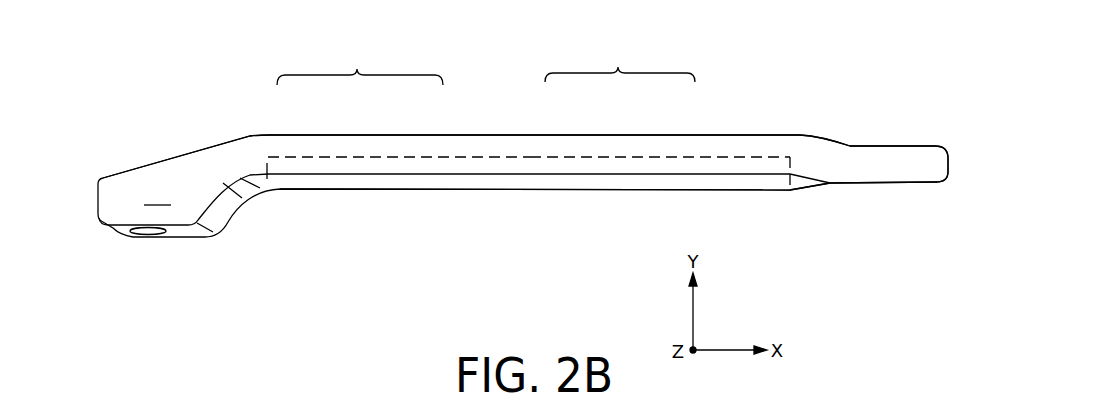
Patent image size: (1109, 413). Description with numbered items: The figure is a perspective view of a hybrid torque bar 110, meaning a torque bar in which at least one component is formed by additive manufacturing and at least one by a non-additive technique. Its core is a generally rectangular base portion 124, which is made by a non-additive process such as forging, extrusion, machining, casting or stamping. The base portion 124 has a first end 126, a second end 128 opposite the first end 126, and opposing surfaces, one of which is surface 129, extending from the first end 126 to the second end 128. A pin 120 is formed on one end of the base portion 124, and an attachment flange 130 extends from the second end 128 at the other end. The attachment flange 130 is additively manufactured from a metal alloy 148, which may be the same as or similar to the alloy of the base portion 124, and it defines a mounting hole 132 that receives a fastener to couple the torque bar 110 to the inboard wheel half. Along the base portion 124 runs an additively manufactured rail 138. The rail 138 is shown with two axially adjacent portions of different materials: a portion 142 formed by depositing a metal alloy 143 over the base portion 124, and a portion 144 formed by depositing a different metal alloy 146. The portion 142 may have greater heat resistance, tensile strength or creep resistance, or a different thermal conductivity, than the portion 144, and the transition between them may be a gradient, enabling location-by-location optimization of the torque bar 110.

The torque bar 110 is at (727, 59).
The pin 120 is at (882, 147).
The base portion 124 is at (553, 188).
The first end 126 is at (795, 199).
The second end 128 is at (286, 197).
The opposing surface 129 is at (455, 181).
The attachment flange 130 is at (160, 163).
The mounting hole 132 is at (152, 250).
The rail 138 is at (478, 135).
The portion of rail 142 is at (360, 62).
The metal alloy 143 is at (321, 137).
The portion of rail 144 is at (620, 60).
The metal alloy 146 is at (612, 135).
The metal alloy 148 is at (148, 202).